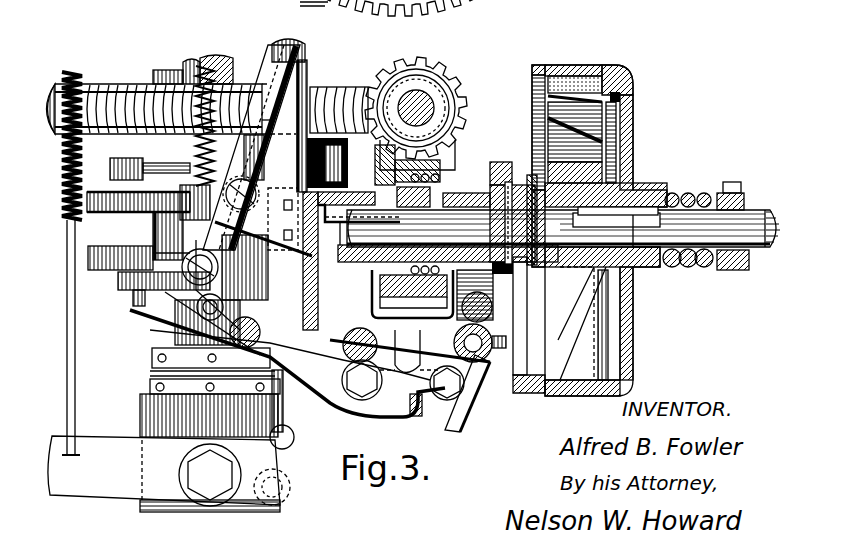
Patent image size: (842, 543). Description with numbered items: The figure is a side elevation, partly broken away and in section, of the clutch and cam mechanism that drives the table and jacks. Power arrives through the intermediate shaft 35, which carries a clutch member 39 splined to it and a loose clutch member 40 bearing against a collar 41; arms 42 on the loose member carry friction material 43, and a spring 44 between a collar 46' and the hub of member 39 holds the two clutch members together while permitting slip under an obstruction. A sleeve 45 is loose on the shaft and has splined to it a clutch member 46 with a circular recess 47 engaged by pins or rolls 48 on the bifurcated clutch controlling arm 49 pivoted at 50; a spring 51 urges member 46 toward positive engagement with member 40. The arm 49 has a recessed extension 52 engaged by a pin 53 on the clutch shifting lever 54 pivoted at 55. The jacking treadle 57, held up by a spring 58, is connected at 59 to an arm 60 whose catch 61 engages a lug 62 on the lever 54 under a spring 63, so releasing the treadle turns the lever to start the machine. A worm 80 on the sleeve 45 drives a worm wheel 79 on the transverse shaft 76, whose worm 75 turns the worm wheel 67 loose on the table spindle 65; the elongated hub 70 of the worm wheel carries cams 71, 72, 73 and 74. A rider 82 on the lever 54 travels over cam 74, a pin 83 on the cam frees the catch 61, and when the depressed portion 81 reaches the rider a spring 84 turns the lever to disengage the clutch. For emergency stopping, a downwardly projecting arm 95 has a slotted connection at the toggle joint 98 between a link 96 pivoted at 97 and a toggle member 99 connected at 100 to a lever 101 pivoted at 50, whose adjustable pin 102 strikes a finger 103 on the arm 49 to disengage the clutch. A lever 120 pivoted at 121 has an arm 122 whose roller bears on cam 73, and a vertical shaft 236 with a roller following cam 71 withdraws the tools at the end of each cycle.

The intermediate shaft 35 is at (765, 210).
The clutch member 39 is at (633, 128).
The loose clutch member 40 is at (530, 178).
The collar 41 is at (520, 185).
The arms 42 is at (605, 330).
The friction material 43 is at (578, 82).
The spring 44 is at (690, 267).
The sleeve 45 is at (453, 182).
The clutch member 46 is at (494, 184).
The collar 46' is at (740, 245).
The circular recess 47 is at (468, 190).
The pins or rolls 48 is at (493, 300).
The clutch controlling arm 49 is at (494, 318).
The pivot 50 is at (478, 330).
The spring 51 is at (396, 165).
The recessed extension 52 is at (470, 360).
The pin 53 is at (405, 365).
The clutch shifting lever 54 is at (283, 332).
The pivot 55 is at (362, 338).
The jacking treadle 57 is at (106, 450).
The spring 58 is at (64, 190).
The connection 59 is at (285, 490).
The arm 60 is at (284, 438).
The catch 61 is at (304, 302).
The lug or projection 62 is at (150, 350).
The spring 63 is at (155, 360).
The table spindle or shaft 65 is at (218, 58).
The worm wheel 67 is at (108, 80).
The hub 70 is at (165, 72).
The cam 71 is at (124, 160).
The cam 72 is at (112, 170).
The cam 73 is at (98, 250).
The cam 74 is at (120, 284).
The worm 75 is at (445, 80).
The transverse shaft 76 is at (400, 102).
The worm wheel 79 is at (463, 106).
The worm 80 is at (338, 163).
The depressed portion 81 is at (165, 292).
The projection or rider 82 is at (195, 292).
The pin 83 is at (133, 302).
The spring 84 is at (185, 62).
The downwardly projecting arm 95 is at (275, 68).
The link 96 is at (247, 201).
The bracket pivot 97 is at (322, 95).
The toggle joint 98 is at (182, 266).
The toggle member 99 is at (304, 292).
The connection 100 is at (160, 380).
The lever 101 is at (338, 405).
The adjustable pin 102 is at (414, 402).
The finger 103 is at (470, 415).
The lever 120 is at (312, 3).
The pivot 121 is at (360, 10).
The arm 122 is at (478, 3).
The vertical shaft 236 is at (306, 50).